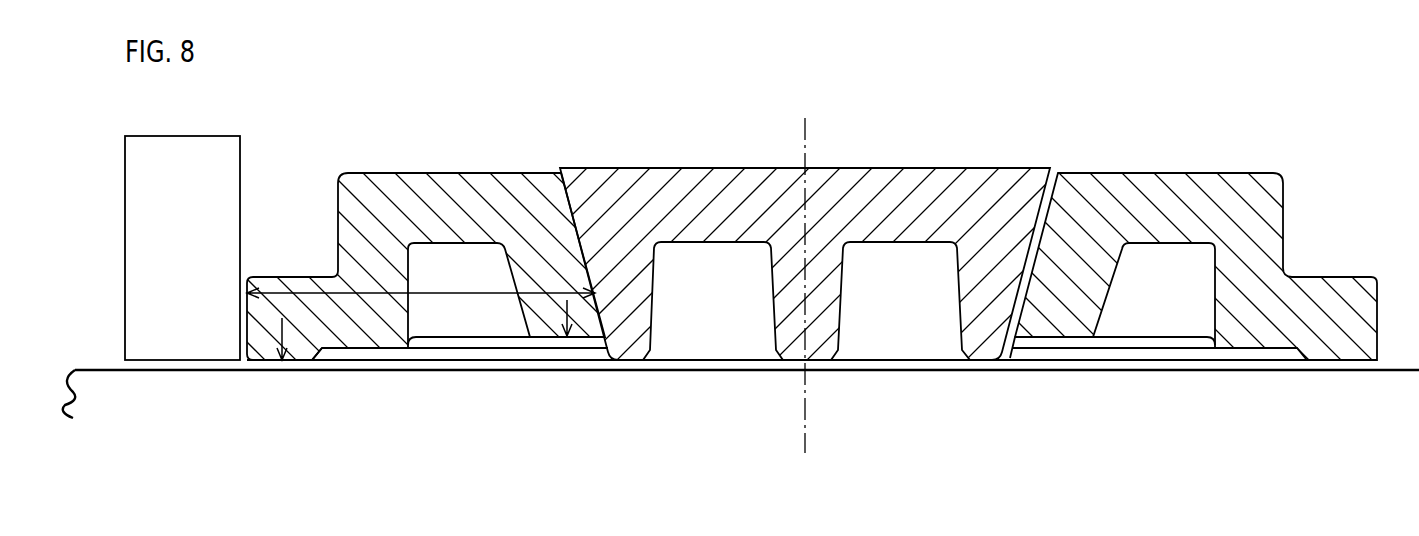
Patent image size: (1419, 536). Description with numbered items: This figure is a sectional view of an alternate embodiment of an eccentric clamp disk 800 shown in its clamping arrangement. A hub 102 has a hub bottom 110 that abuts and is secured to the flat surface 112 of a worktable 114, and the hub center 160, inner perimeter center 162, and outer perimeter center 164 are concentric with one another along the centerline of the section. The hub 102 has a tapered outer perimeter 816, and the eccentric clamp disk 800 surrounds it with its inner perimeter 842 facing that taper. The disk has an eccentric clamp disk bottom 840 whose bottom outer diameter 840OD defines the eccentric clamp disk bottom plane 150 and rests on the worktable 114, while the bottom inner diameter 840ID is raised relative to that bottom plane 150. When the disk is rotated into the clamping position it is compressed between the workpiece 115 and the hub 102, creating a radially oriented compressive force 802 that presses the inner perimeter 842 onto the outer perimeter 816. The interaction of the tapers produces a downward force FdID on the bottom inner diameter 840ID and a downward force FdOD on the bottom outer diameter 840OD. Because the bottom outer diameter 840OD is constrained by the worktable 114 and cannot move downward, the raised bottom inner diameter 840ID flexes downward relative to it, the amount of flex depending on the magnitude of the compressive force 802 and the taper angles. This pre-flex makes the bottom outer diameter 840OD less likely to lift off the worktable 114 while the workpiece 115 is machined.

The workpiece 115 is at (203, 252).
The eccentric clamp disk 800 is at (709, 250).
The hub 102 is at (709, 250).
The inner perimeter of the eccentric clamp disk 842 is at (565, 204).
The outer perimeter of the hub 816 is at (575, 216).
The compressive force 802 is at (435, 293).
The eccentric clamp disk bottom 840 is at (735, 383).
The eccentric clamp disk bottom outer diameter 840OD is at (207, 388).
The eccentric clamp disk bottom inner diameter 840ID is at (548, 338).
The eccentric clamp disk bottom plane 150 is at (262, 362).
The downward force on the bottom outer diameter FdOD is at (303, 362).
The downward force on the bottom inner diameter FdID is at (577, 310).
The hub bottom 110 is at (741, 392).
The flat surface 112 is at (1112, 389).
The worktable 114 is at (1097, 373).
The hub center 160 is at (726, 287).
The inner perimeter center 162 is at (726, 287).
The outer perimeter center 164 is at (805, 428).